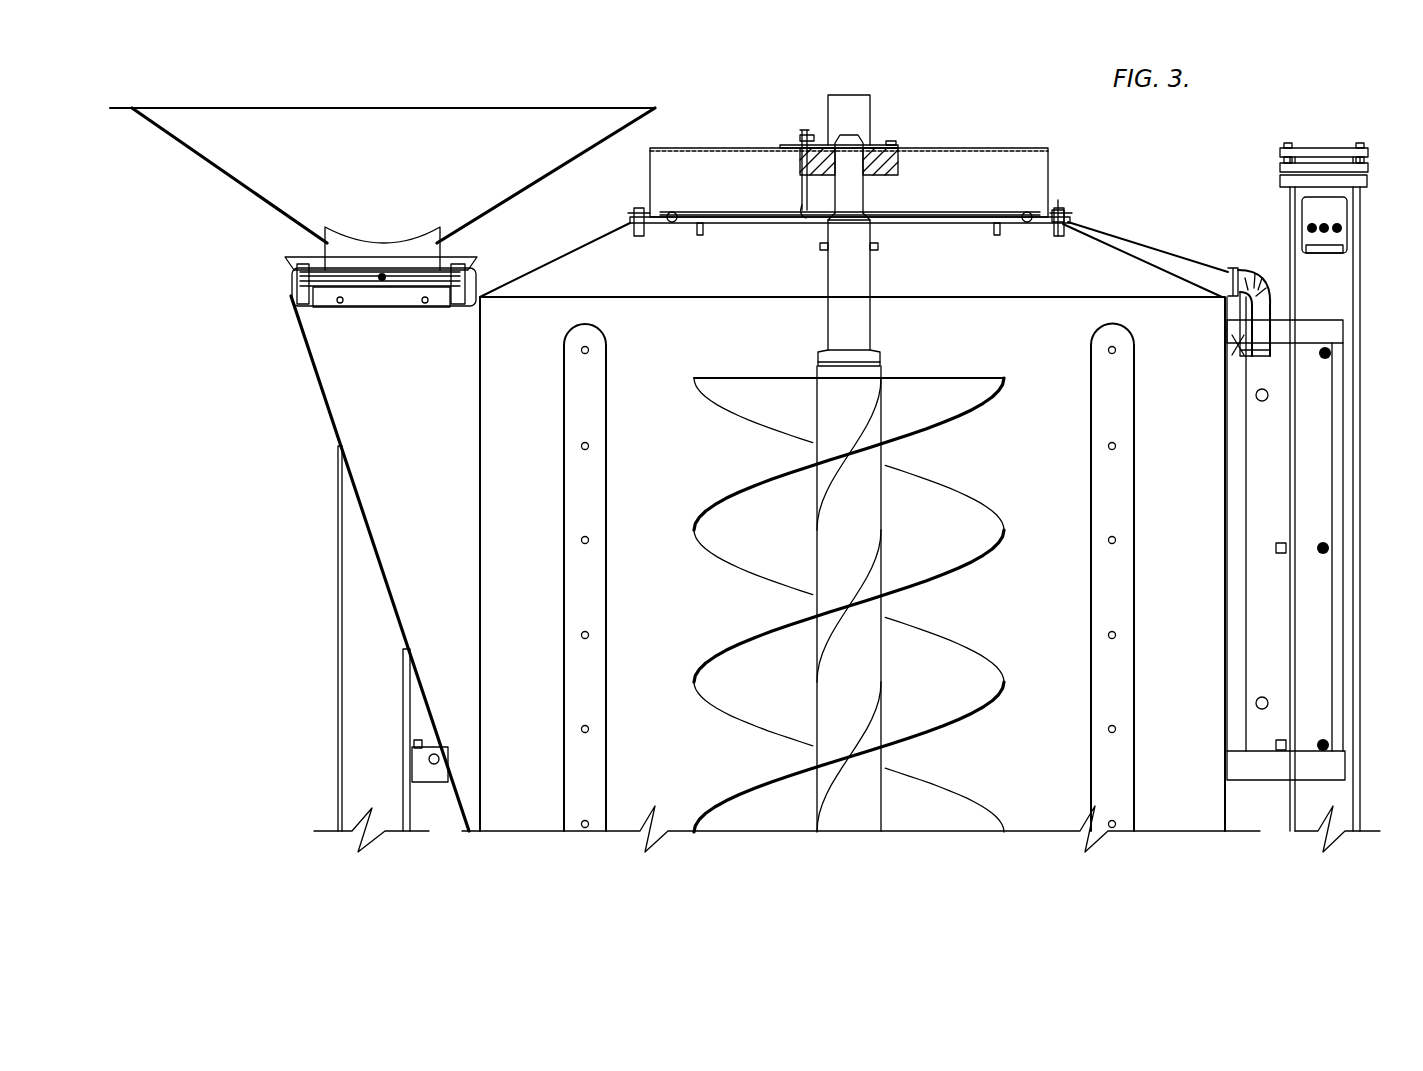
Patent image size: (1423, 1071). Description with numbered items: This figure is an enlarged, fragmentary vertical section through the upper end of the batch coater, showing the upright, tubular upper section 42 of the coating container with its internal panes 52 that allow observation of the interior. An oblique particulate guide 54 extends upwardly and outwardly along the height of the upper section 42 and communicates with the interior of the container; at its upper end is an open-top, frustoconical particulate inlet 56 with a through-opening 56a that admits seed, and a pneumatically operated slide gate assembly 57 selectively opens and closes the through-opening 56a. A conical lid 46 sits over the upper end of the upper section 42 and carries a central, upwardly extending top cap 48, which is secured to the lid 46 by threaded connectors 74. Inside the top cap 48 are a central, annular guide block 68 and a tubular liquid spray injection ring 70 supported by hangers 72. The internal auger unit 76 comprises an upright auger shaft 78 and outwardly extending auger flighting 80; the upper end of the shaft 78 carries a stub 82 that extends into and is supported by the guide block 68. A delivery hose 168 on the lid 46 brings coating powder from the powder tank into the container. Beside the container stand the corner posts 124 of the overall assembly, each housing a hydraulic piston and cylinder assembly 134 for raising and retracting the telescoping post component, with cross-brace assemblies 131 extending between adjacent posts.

The upright tubular upper section 42 is at (1228, 813).
The conical lid 46 is at (1150, 246).
The top cap 48 is at (1003, 147).
The internal panes 52 is at (600, 480).
The oblique particulate guide 54 is at (350, 408).
The frustoconical particulate inlet 56 is at (235, 122).
The through-opening 56a is at (386, 256).
The slide gate assembly 57 is at (283, 268).
The annular guide block 68 is at (893, 160).
The liquid spray injection ring 70 is at (982, 213).
The hangers 72 is at (797, 192).
The threaded connectors 74 is at (1065, 215).
The auger unit 76 is at (842, 580).
The auger shaft 78 is at (838, 280).
The auger flighting 80 is at (740, 553).
The stub 82 is at (855, 188).
The corner posts 124 is at (325, 630).
The cross-brace assemblies 131 is at (1335, 318).
The hydraulic piston and cylinder assembly 134 is at (1321, 215).
The delivery hose 168 is at (1190, 258).